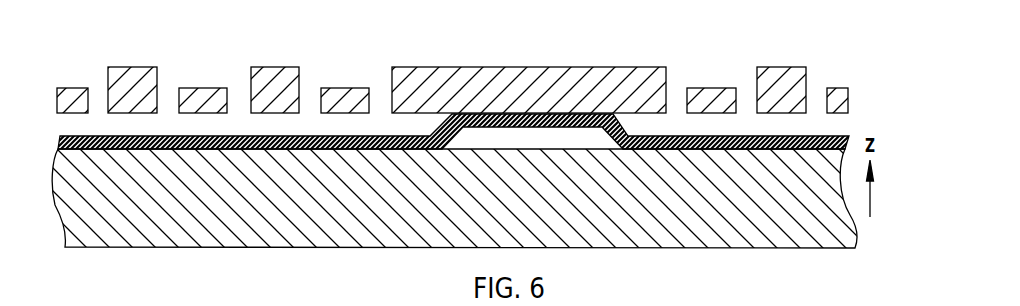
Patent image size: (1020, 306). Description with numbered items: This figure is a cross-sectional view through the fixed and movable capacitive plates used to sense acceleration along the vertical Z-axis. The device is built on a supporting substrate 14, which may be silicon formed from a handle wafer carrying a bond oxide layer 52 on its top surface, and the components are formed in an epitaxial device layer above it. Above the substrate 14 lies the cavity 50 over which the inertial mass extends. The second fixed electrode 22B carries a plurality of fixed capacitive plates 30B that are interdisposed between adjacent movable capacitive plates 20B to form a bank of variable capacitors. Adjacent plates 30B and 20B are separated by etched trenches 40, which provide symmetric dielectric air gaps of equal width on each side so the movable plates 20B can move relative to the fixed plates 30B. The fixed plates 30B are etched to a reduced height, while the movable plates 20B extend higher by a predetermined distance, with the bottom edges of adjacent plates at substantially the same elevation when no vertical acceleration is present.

The supporting substrate 14 is at (84, 248).
The bond oxide layer 52 is at (147, 150).
The second fixed electrode 22B is at (553, 70).
The second fixed capacitive plates 30B is at (138, 67).
The second movable capacitive plates 20B is at (74, 88).
The etched trenches 40 is at (99, 90).
The cavity 50 is at (825, 129).